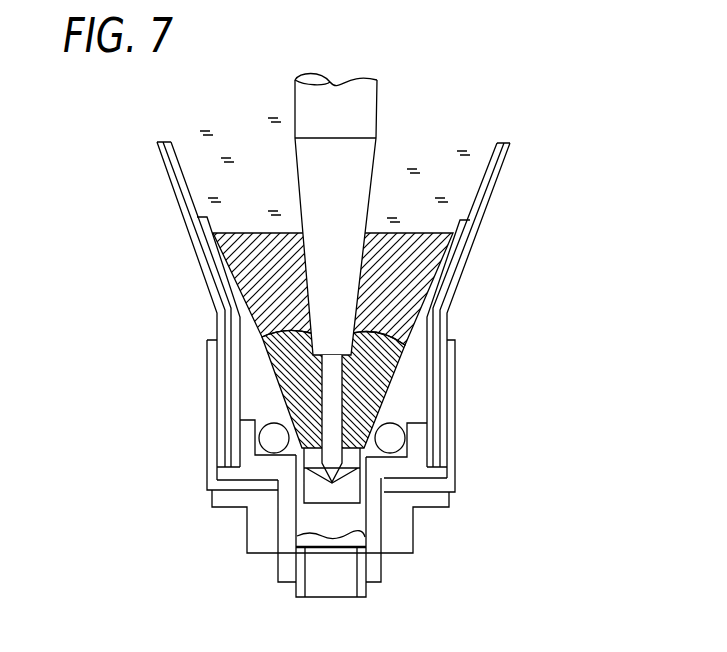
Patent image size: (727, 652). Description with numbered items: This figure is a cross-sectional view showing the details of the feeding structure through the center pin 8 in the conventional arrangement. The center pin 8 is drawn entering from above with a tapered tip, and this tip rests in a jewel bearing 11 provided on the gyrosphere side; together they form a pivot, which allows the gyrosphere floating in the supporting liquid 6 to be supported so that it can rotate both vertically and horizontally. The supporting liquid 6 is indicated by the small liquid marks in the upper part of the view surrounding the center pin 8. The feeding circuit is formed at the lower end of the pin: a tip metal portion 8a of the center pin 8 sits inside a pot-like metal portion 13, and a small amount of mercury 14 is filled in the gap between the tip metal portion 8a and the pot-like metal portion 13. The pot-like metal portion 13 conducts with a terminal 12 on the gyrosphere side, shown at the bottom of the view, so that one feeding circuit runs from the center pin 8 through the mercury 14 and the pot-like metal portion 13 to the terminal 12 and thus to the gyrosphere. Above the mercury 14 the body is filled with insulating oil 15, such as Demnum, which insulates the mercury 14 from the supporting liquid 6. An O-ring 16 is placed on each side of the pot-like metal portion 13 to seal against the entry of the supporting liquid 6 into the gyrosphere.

The supporting liquid 6 is at (435, 185).
The center pin 8 is at (351, 278).
The tip metal portion 8a is at (332, 399).
The jewel bearing 11 is at (337, 492).
The terminal 12 is at (363, 588).
The pot-like metal portion 13 is at (413, 355).
The mercury 14 is at (368, 388).
The insulating oil 15 is at (425, 268).
The O-ring 16 is at (390, 438).